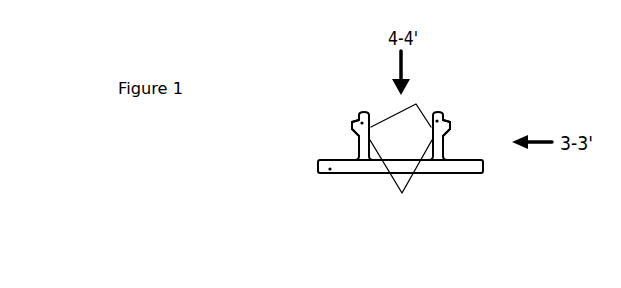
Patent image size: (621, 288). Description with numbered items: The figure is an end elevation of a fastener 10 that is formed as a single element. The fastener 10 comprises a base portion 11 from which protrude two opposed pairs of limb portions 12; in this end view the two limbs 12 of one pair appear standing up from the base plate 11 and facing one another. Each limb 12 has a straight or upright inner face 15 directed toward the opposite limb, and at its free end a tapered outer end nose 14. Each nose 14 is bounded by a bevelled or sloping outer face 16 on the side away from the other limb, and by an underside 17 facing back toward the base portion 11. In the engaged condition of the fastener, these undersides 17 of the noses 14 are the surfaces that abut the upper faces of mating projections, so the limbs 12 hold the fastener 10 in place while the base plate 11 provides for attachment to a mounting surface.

The fastener 10 is at (390, 156).
The base portion 11 is at (330, 169).
The limb portion 12 is at (402, 193).
The tapered outer end nose 14 is at (362, 123).
The inner face 15 is at (416, 104).
The outer face 16 is at (358, 130).
The underside 17 is at (355, 134).